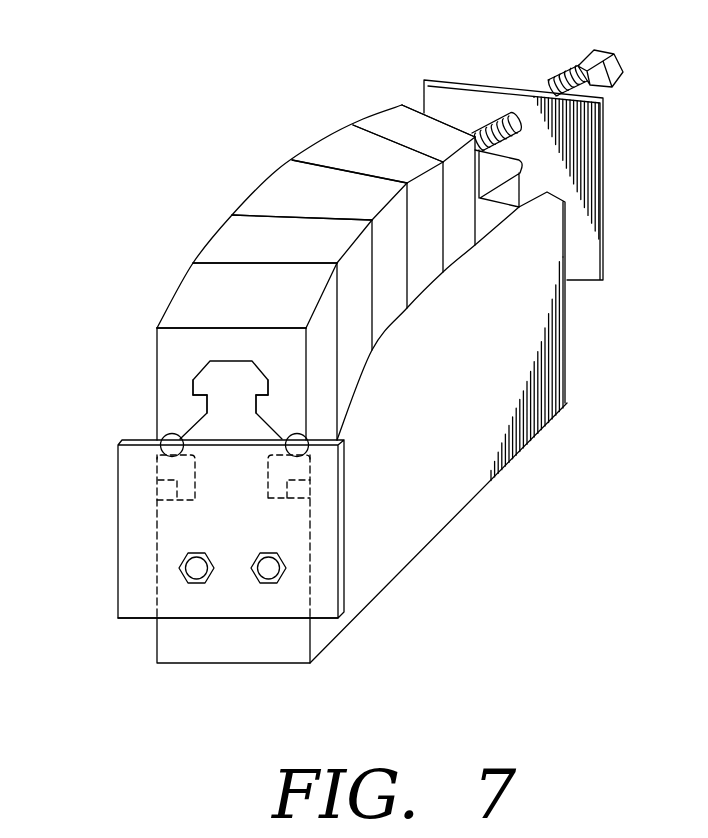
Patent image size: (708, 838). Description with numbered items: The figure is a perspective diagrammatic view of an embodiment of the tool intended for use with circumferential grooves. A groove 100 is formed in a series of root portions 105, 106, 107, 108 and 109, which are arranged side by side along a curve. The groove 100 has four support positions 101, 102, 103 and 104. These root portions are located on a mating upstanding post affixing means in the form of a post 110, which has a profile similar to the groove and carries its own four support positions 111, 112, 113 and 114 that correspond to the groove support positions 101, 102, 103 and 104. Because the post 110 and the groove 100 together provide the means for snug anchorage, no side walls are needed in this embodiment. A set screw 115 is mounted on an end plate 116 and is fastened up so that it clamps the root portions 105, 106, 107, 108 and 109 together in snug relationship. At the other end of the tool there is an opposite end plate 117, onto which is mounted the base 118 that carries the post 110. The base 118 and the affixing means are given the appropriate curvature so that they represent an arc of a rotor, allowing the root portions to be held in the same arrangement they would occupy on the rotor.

The groove 100 is at (200, 368).
The groove support position 101 is at (160, 440).
The groove support position 102 is at (193, 384).
The groove support position 103 is at (268, 384).
The groove support position 104 is at (283, 452).
The root portion 105 is at (207, 295).
The root portion 106 is at (240, 240).
The root portion 107 is at (290, 193).
The root portion 108 is at (333, 152).
The root portion 109 is at (390, 123).
The post 110 is at (233, 397).
The post support position 111 is at (183, 455).
The post support position 112 is at (205, 395).
The post support position 113 is at (268, 396).
The post support position 114 is at (296, 481).
The set screw 115 is at (570, 75).
The end plate 116 is at (424, 90).
The opposite end plate 117 is at (333, 548).
The base 118 is at (261, 653).